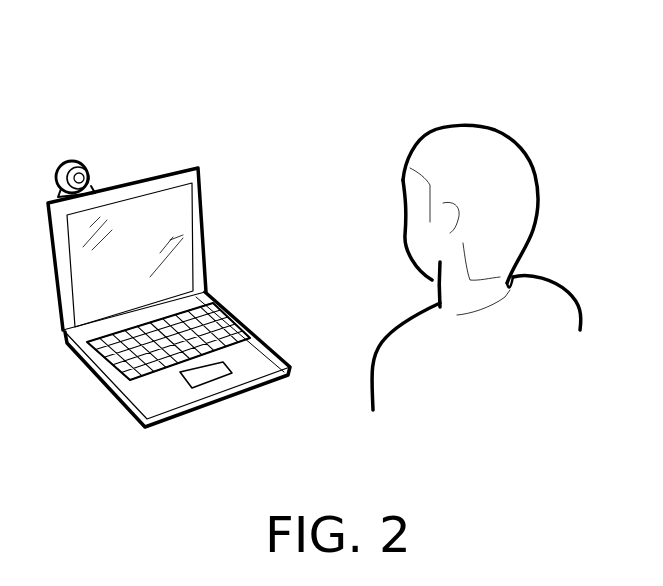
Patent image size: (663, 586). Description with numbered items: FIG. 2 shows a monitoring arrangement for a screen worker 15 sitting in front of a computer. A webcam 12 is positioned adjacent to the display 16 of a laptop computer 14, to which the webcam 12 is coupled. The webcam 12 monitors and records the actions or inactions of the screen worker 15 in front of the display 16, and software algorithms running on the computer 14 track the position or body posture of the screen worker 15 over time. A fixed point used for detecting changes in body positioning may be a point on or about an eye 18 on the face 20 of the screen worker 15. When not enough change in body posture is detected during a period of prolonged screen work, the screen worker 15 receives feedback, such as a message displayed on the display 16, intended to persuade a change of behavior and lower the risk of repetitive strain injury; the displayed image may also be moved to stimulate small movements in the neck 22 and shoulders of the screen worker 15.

The webcam 12 is at (87, 178).
The computer 14 is at (262, 358).
The screen worker 15 is at (467, 220).
The display 16 is at (183, 222).
The eye 18 is at (407, 204).
The face 20 is at (522, 200).
The neck 22 is at (487, 293).